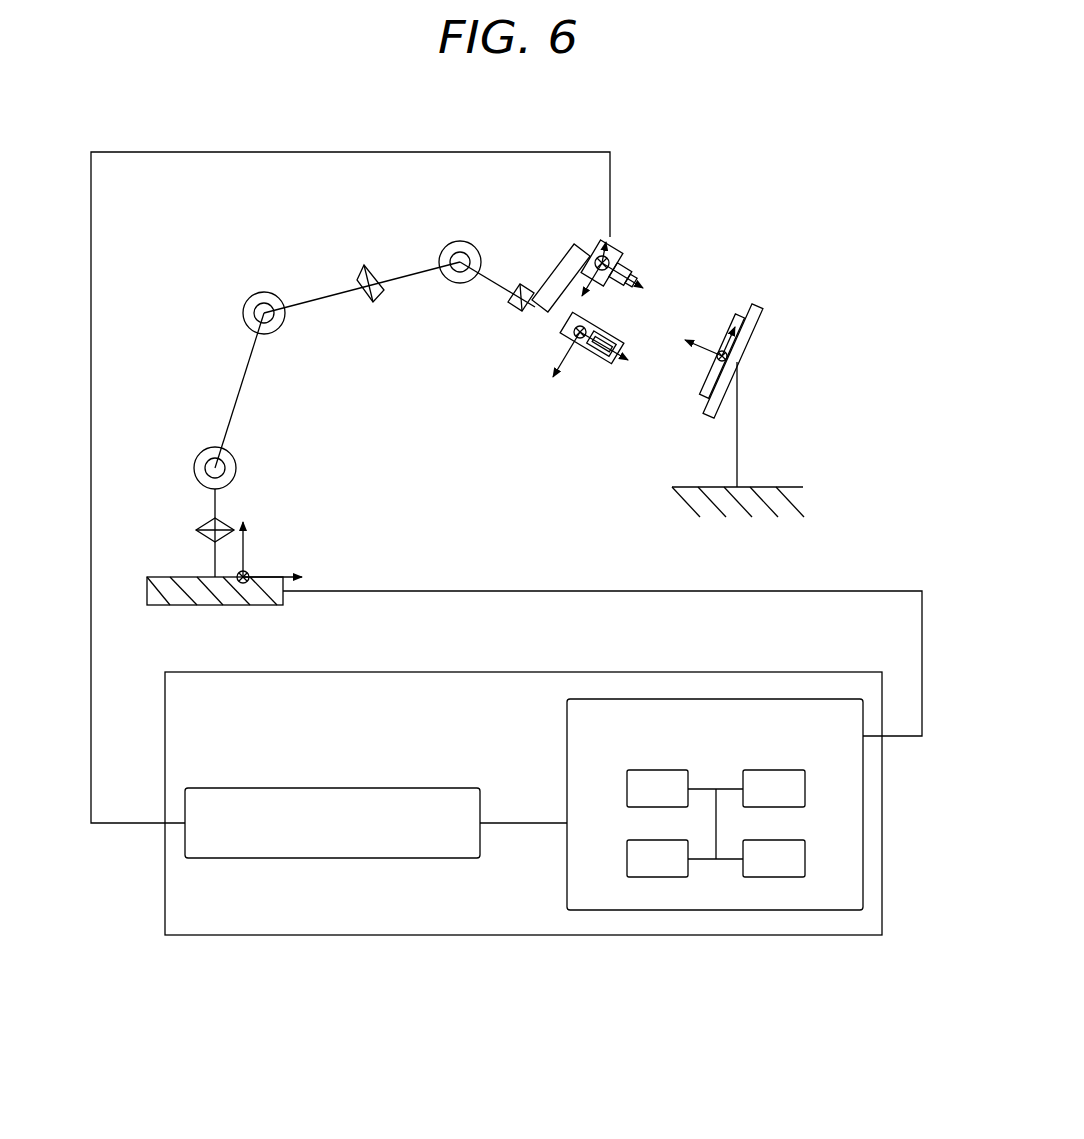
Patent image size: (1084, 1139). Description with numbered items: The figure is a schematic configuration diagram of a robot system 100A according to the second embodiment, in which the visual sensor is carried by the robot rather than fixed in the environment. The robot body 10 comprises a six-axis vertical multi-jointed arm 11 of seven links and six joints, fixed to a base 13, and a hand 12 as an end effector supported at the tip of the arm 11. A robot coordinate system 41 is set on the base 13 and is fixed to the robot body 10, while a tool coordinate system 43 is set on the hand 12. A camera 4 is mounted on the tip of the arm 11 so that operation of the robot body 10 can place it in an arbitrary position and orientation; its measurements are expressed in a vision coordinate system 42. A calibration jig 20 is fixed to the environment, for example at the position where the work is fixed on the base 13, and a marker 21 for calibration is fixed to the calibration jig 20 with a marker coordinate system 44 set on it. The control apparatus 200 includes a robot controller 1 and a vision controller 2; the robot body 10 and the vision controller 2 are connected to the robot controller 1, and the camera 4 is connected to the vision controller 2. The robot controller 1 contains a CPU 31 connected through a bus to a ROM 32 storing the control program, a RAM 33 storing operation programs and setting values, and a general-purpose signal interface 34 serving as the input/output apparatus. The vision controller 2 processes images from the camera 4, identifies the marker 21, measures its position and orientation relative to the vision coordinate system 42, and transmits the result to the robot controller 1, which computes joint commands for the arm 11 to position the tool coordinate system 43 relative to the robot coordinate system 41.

The robot system 100A is at (738, 130).
The robot body 10 is at (255, 250).
The multi-jointed arm 11 is at (330, 293).
The hand 12 is at (557, 332).
The camera 4 is at (628, 260).
The vision coordinate system 42 is at (637, 272).
The tool coordinate system 43 is at (568, 365).
The robot coordinate system 41 is at (247, 543).
The base 13 is at (163, 583).
The calibration jig 20 is at (755, 335).
The marker 21 is at (747, 313).
The marker coordinate system 44 is at (698, 350).
The control apparatus 200 is at (783, 672).
The robot controller 1 is at (567, 720).
The vision controller 2 is at (398, 787).
The CPU 31 is at (627, 786).
The ROM 32 is at (627, 856).
The RAM 33 is at (805, 788).
The general-purpose signal interface 34 is at (805, 858).